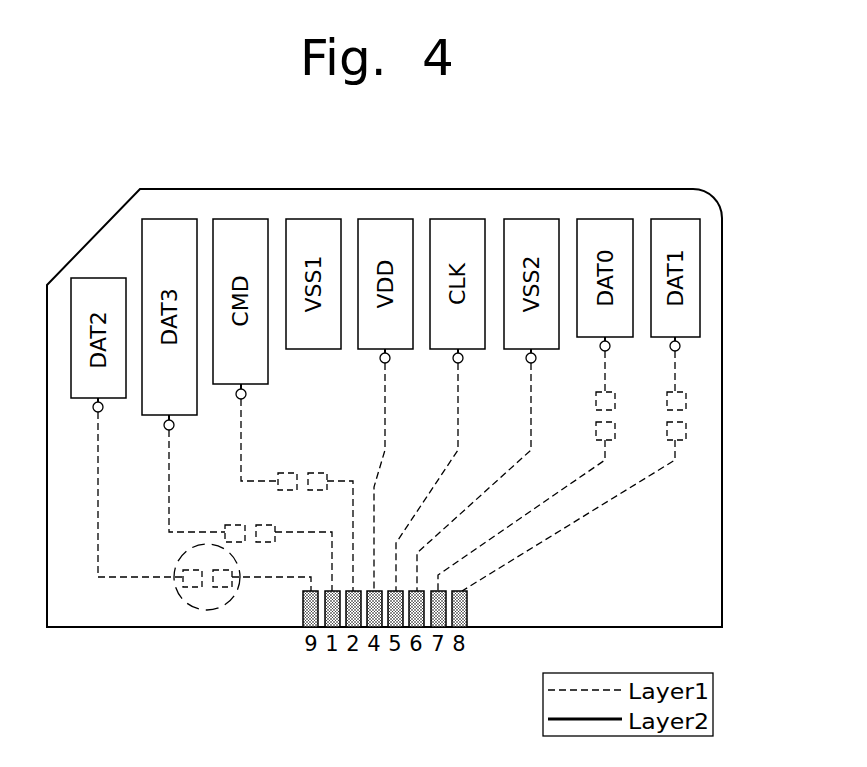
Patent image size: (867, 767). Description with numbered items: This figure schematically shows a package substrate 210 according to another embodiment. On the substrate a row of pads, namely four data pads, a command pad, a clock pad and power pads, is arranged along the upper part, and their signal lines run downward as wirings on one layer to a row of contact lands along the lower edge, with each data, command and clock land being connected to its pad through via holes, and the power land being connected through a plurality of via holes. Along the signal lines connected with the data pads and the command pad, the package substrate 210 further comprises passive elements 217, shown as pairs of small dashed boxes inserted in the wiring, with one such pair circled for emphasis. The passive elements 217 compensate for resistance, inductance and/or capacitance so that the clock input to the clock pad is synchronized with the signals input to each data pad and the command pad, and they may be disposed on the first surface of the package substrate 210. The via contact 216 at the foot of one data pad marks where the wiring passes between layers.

The package substrate 210 is at (715, 138).
The via contact 216 is at (680, 346).
The passive elements 217 is at (205, 610).